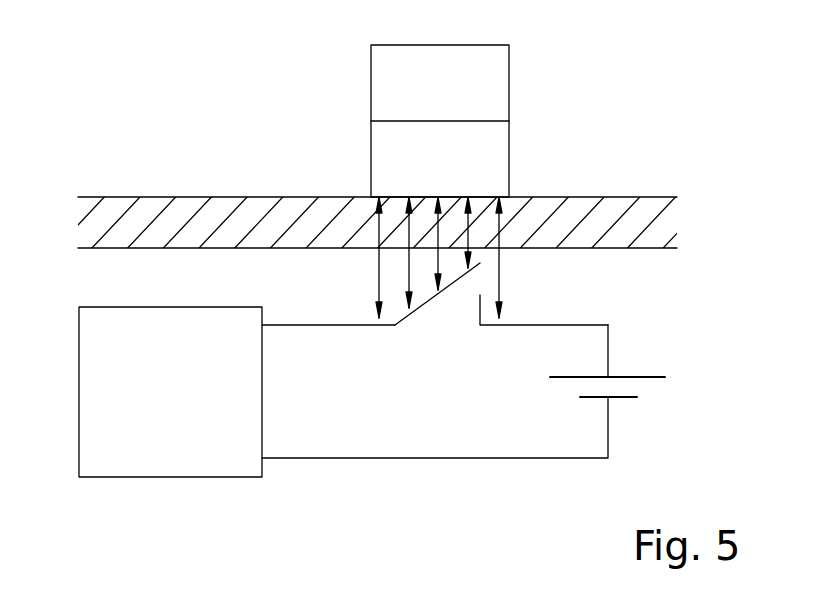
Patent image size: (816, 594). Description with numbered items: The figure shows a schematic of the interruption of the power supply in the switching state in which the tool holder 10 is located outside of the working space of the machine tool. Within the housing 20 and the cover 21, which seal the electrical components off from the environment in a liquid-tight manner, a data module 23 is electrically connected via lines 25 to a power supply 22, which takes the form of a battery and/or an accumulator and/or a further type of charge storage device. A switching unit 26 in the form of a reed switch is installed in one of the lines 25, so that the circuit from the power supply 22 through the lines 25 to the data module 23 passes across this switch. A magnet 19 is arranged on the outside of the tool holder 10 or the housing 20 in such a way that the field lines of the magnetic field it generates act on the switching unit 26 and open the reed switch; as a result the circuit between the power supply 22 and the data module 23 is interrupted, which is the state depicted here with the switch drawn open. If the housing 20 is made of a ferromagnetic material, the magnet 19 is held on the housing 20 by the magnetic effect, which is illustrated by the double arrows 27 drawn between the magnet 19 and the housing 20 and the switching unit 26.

The tool holder 10 is at (383, 155).
The housing 20 is at (383, 222).
The cover 21 is at (140, 220).
The magnet 19 is at (511, 80).
The double arrows 27 is at (502, 222).
The switching unit 26 is at (402, 323).
The lines 25 is at (517, 327).
The power supply 22 is at (655, 368).
The data module 23 is at (137, 477).